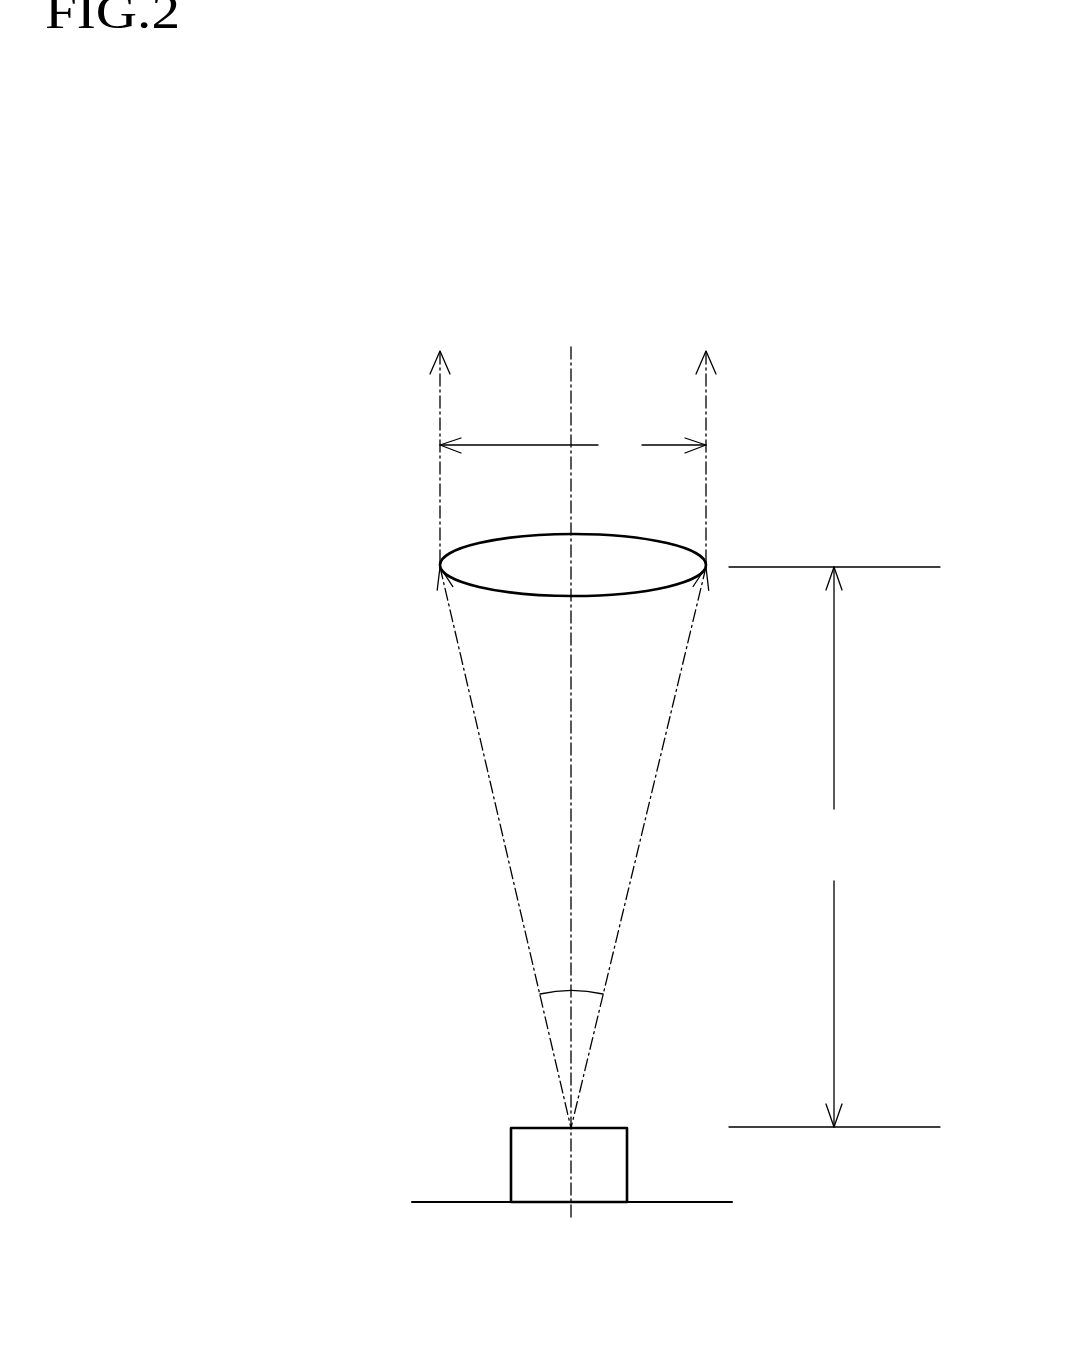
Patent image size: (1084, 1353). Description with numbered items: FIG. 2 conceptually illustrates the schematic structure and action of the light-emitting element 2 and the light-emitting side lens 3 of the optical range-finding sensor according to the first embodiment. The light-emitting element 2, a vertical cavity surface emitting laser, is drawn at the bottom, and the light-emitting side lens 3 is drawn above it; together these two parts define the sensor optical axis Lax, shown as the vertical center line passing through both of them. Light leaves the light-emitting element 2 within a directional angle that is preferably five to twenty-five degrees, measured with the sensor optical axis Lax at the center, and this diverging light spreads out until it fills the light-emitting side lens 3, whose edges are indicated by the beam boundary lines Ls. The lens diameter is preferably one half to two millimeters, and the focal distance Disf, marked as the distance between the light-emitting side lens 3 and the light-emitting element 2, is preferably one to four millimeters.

The light-emitting element 2 is at (548, 1175).
The light-emitting side lens 3 is at (515, 577).
The sensor optical axis Lax is at (571, 360).
The light beam boundary Ls is at (706, 398).
The focal distance of the light-emitting side lens Disf is at (834, 847).